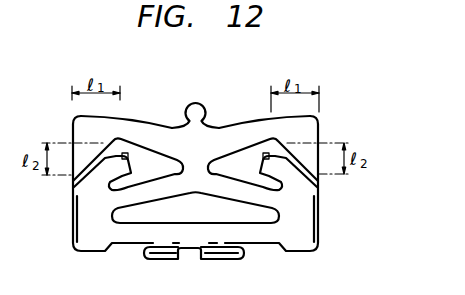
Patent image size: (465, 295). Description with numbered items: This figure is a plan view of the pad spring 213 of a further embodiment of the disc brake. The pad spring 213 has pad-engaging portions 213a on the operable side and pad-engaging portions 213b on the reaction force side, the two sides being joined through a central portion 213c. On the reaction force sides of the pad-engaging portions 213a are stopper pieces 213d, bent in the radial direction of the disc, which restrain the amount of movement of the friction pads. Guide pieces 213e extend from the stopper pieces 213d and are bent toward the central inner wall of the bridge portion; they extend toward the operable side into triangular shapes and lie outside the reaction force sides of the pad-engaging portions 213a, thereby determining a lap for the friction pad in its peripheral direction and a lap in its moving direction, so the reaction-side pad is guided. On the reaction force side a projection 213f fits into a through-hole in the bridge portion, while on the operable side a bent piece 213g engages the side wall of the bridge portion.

The pad spring 213 is at (148, 65).
The pad-engaging portions 213a is at (105, 238).
The pad-engaging portions 213b is at (97, 127).
The center bar 213c is at (199, 173).
The stopper pieces 213d is at (124, 153).
The guide pieces 213e is at (73, 181).
The projection 213f is at (197, 102).
The bent piece 213g is at (176, 259).